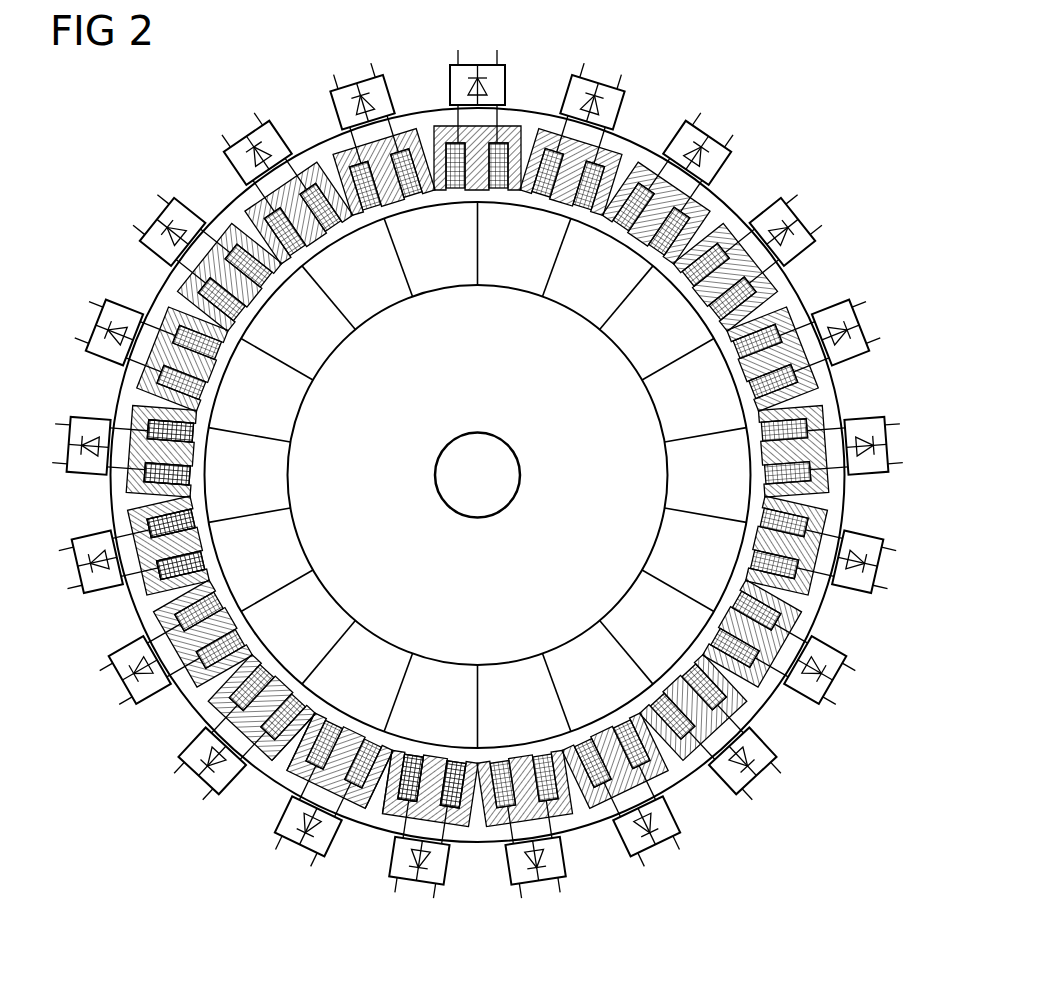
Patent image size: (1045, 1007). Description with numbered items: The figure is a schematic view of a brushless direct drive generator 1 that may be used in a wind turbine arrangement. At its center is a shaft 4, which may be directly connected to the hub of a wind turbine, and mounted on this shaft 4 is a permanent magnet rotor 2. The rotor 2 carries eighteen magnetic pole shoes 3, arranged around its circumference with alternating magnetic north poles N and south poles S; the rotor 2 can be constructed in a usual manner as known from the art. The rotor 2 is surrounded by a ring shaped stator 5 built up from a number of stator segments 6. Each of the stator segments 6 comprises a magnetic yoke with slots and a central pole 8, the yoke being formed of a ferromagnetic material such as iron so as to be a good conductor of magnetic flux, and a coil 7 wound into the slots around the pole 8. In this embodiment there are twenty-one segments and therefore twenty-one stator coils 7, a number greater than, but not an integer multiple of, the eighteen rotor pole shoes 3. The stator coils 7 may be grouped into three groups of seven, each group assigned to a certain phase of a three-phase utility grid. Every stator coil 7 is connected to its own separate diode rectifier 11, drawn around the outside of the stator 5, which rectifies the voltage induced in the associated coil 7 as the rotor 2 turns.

The direct drive generator 1 is at (704, 74).
The permanent magnet rotor 2 is at (651, 722).
The magnetic pole shoes 3 is at (673, 488).
The shaft 4 is at (520, 475).
The ring shaped stator 5 is at (354, 830).
The stator segments 6 is at (192, 676).
The stator coil 7 is at (173, 472).
The central pole 8 is at (217, 623).
The diode rectifier 11 is at (568, 92).